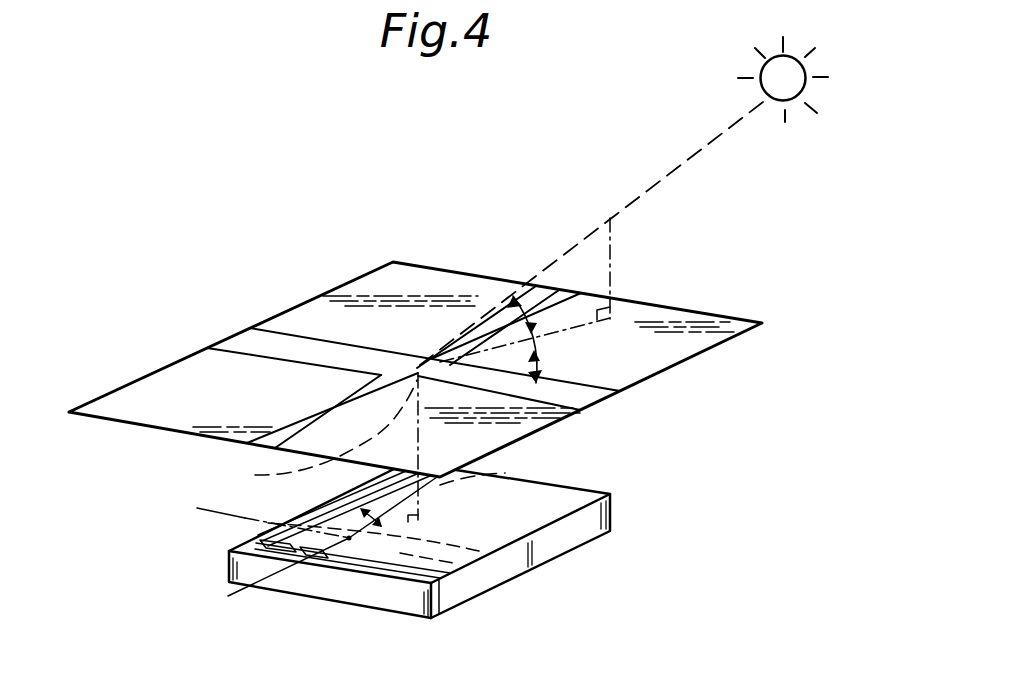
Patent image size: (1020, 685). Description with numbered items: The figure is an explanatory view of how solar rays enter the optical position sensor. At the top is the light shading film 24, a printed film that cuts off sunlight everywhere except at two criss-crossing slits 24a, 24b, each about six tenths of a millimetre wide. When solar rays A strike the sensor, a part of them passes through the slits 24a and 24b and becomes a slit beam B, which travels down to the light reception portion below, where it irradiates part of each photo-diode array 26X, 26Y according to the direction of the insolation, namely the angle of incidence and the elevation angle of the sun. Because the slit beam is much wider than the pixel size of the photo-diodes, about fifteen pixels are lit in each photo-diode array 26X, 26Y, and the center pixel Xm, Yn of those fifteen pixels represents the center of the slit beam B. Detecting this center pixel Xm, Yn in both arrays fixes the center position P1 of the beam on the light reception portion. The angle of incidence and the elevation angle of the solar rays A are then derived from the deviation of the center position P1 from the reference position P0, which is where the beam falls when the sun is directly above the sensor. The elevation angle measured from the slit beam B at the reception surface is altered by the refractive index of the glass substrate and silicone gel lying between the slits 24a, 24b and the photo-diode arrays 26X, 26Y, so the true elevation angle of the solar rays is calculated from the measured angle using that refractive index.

The light shading film 24 is at (393, 277).
The slit 24a is at (280, 433).
The slit 24b is at (265, 340).
The photo-diode array 26X is at (446, 580).
The photo-diode array 26Y is at (229, 562).
The solar rays A is at (662, 176).
The slit beam B is at (362, 471).
The reference position P0 is at (418, 525).
The center position of the slit beam P1 is at (349, 540).
The center pixel Xm is at (309, 548).
The center pixel Yn is at (250, 512).